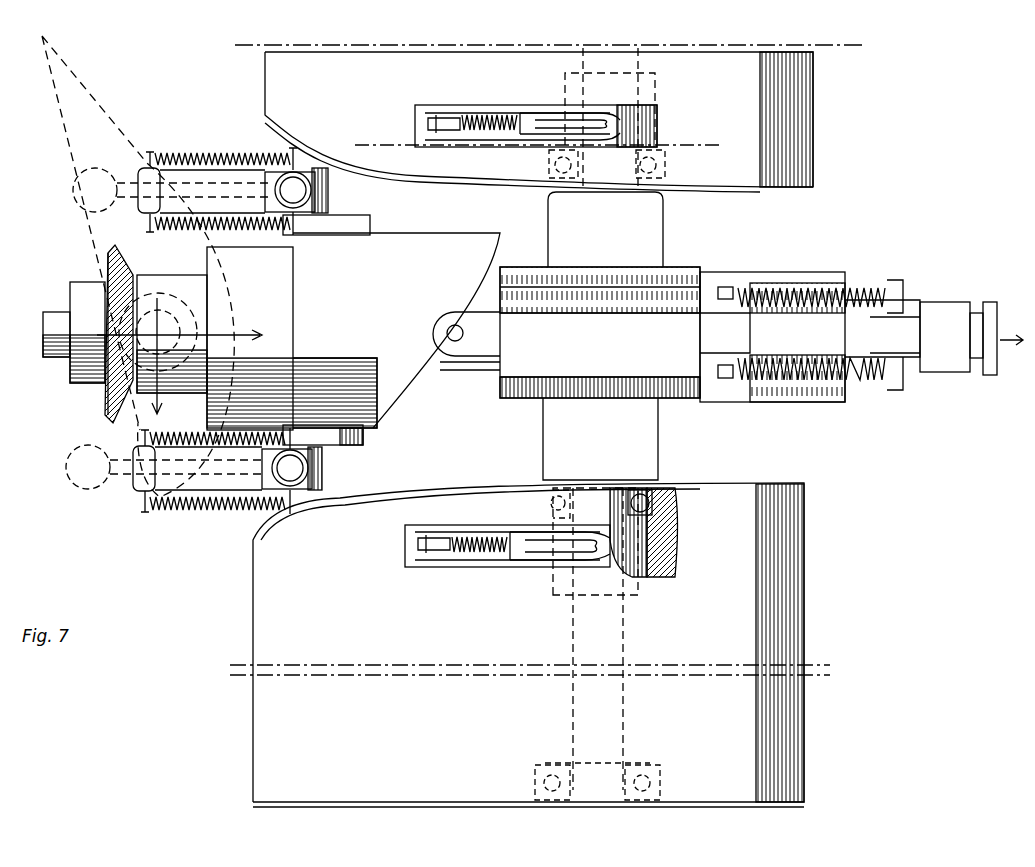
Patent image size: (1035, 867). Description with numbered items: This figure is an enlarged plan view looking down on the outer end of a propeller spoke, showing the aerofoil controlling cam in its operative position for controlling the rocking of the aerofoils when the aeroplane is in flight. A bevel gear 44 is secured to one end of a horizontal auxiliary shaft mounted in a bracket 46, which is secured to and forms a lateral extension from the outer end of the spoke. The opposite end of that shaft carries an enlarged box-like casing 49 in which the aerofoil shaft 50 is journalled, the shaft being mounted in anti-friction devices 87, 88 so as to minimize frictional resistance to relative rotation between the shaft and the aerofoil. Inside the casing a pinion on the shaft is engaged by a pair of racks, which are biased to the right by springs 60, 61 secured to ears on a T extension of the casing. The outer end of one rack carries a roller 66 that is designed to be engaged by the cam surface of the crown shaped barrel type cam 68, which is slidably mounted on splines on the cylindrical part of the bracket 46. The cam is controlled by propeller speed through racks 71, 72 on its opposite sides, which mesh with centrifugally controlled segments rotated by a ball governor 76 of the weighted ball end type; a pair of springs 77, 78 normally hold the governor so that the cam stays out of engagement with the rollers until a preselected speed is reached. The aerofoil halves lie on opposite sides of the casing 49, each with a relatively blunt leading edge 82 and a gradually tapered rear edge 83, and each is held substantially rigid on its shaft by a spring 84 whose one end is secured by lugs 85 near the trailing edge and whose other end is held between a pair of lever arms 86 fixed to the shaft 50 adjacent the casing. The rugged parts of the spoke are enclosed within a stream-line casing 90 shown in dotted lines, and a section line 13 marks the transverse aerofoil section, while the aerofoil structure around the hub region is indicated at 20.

The section line 13 is at (388, 138).
The frame 20 is at (308, 69).
The bevel gear 44 is at (100, 403).
The bracket 46 is at (262, 302).
The box-like casing 49 is at (628, 352).
The aerofoil shaft 50 is at (628, 124).
The spring 60 is at (860, 292).
The spring 61 is at (862, 380).
The roller 66 is at (455, 345).
The crown shaped barrel type cam 68 is at (432, 250).
The rack 71 is at (366, 226).
The rack 72 is at (352, 440).
The ball governor 76 is at (298, 183).
The spring 77 is at (188, 428).
The spring 78 is at (195, 150).
The leading edge 82 is at (805, 545).
The rear edge 83 is at (252, 598).
The spring 84 is at (490, 118).
The lugs 85 is at (445, 112).
The lever arms 86 is at (545, 113).
The anti-friction device 87 is at (660, 172).
The anti-friction device 88 is at (660, 778).
The stream-line casing 90 is at (60, 118).